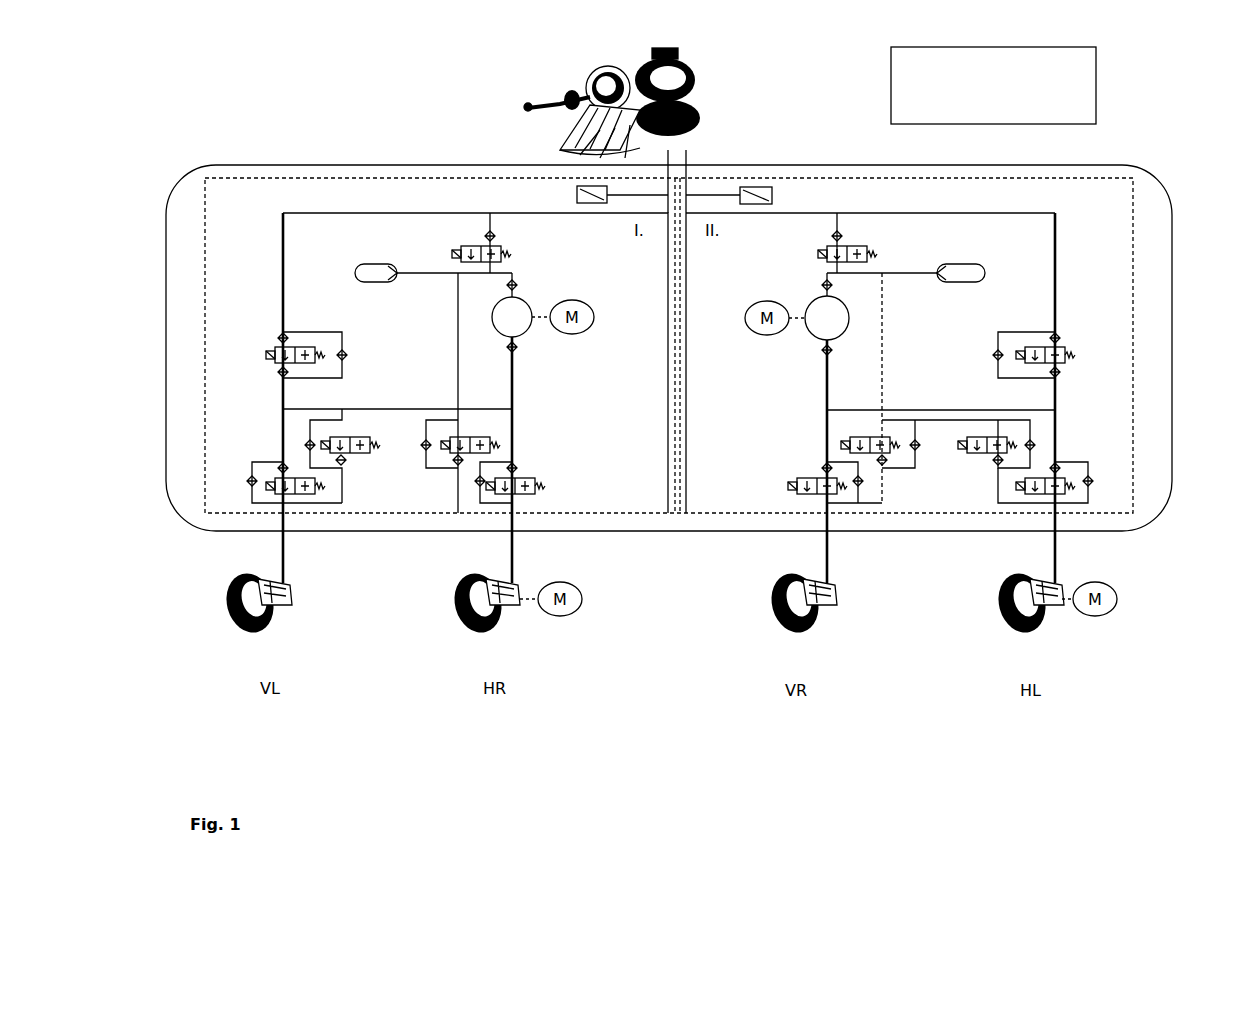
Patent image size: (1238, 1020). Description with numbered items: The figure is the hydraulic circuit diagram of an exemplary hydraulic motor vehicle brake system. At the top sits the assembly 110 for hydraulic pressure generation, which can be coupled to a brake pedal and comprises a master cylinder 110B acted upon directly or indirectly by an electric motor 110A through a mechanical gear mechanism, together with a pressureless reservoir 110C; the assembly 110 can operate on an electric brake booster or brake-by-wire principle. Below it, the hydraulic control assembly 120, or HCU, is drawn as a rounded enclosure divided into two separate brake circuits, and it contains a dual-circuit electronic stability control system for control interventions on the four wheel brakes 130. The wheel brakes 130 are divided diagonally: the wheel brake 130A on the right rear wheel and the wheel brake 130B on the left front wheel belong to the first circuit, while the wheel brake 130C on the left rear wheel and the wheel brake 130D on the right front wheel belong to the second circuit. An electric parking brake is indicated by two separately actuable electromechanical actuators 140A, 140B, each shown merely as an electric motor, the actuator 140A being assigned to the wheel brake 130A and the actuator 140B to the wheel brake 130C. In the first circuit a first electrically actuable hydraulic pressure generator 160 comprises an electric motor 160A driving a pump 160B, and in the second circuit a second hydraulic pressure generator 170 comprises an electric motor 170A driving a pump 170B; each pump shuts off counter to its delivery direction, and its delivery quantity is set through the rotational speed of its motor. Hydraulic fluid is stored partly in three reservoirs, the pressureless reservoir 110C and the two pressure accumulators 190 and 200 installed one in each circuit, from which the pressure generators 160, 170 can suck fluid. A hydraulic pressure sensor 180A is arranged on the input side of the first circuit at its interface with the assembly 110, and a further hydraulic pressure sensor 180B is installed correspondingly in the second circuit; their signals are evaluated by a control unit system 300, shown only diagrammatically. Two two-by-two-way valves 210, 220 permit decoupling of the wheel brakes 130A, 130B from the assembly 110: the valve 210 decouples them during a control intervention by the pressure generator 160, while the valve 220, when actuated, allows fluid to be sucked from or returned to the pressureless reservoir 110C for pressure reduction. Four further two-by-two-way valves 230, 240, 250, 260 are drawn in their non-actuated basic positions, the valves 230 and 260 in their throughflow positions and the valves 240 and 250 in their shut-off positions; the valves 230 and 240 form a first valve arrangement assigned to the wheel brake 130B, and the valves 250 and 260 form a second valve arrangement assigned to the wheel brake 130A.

The assembly for hydraulic pressure generation 110 is at (625, 94).
The electric motor 110A is at (602, 86).
The master cylinder 110B is at (705, 118).
The pressureless reservoir 110C is at (732, 58).
The hydraulic control assembly 120 is at (306, 118).
The wheel brakes 130 is at (618, 614).
The wheel brake 130A is at (452, 618).
The wheel brake 130B is at (292, 582).
The wheel brake 130C is at (1025, 635).
The wheel brake 130D is at (815, 630).
The electromechanical actuator 140A is at (583, 590).
The electromechanical actuator 140B is at (1115, 605).
The first hydraulic pressure generator 160 is at (578, 346).
The electric motor 160A is at (594, 312).
The pump 160B is at (527, 300).
The second hydraulic pressure generator 170 is at (782, 351).
The electric motor 170A is at (805, 357).
The pump 170B is at (815, 300).
The hydraulic pressure sensor 180A is at (572, 190).
The hydraulic pressure sensor 180B is at (775, 200).
The reservoir 190 is at (357, 266).
The reservoir 200 is at (978, 264).
The 2/2-way valve 210 is at (280, 338).
The 2/2-way valve 220 is at (503, 250).
The 2/2-way valve 230 is at (264, 477).
The 2/2-way valve 240 is at (388, 445).
The 2/2-way valve 250 is at (500, 436).
The 2/2-way valve 260 is at (545, 480).
The control unit system 300 is at (993, 85).